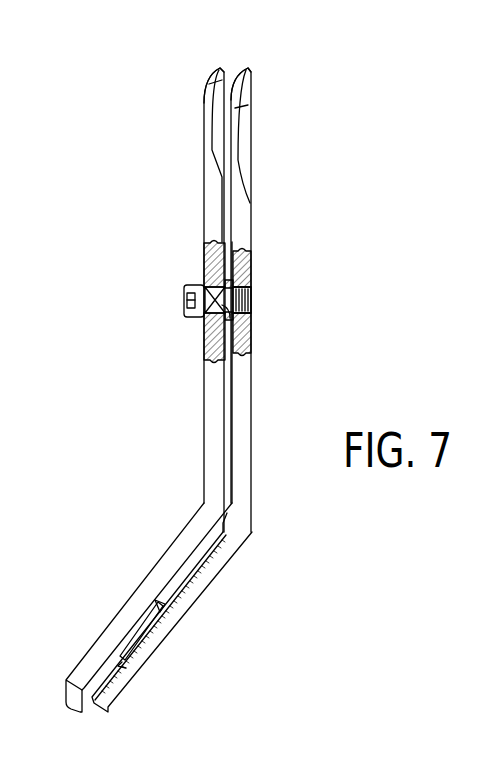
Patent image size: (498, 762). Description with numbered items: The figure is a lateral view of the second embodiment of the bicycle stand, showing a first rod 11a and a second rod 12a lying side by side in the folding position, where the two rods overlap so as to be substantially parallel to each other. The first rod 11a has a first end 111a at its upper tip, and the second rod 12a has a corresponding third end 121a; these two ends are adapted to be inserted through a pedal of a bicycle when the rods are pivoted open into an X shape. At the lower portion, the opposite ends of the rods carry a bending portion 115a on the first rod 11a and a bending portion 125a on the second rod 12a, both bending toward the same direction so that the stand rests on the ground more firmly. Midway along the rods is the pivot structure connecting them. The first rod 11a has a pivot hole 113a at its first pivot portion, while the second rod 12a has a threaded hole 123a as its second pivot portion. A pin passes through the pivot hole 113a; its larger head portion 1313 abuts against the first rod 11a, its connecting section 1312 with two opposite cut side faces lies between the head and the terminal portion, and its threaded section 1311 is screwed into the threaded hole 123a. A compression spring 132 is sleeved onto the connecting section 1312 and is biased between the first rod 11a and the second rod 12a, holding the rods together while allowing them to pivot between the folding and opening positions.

The first rod 11a is at (213, 402).
The first end 111a is at (200, 73).
The pivot hole 113a is at (184, 305).
The bending portion 115a is at (135, 597).
The second rod 12a is at (243, 225).
The third end 121a is at (258, 77).
The threaded hole 123a is at (253, 305).
The bending portion 125a is at (185, 598).
The threaded section 1311 is at (253, 297).
The connecting section 1312 is at (203, 270).
The head portion 1313 is at (188, 287).
The compression spring 132 is at (250, 338).